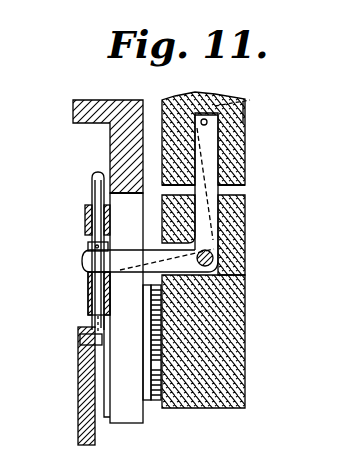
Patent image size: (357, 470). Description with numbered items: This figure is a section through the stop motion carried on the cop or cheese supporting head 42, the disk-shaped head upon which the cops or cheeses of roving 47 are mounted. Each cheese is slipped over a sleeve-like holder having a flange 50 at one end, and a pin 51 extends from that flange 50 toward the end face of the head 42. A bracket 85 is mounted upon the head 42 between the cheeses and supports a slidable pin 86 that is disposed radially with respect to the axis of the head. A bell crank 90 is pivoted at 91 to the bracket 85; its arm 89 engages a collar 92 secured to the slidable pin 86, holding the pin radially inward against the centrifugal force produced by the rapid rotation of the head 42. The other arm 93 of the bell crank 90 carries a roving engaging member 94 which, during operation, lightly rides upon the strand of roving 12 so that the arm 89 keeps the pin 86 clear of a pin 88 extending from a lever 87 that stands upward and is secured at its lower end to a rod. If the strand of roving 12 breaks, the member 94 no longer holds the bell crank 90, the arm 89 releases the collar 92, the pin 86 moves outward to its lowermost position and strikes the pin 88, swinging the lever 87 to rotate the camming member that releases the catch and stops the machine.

The strand of roving 12 is at (250, 100).
The cop or cheese supporting head 42 is at (122, 124).
The length of roving 47 is at (227, 301).
The flange 50 is at (157, 365).
The pin 51 is at (148, 385).
The bracket 85 is at (90, 208).
The slidable pin 86 is at (98, 285).
The lever 87 is at (85, 398).
The pin 88 is at (80, 338).
The arm 89 is at (100, 262).
The bell crank 90 is at (225, 282).
The pivot 91 is at (214, 260).
The collar 92 is at (88, 246).
The arm 93 is at (205, 155).
The roving engaging member 94 is at (226, 118).